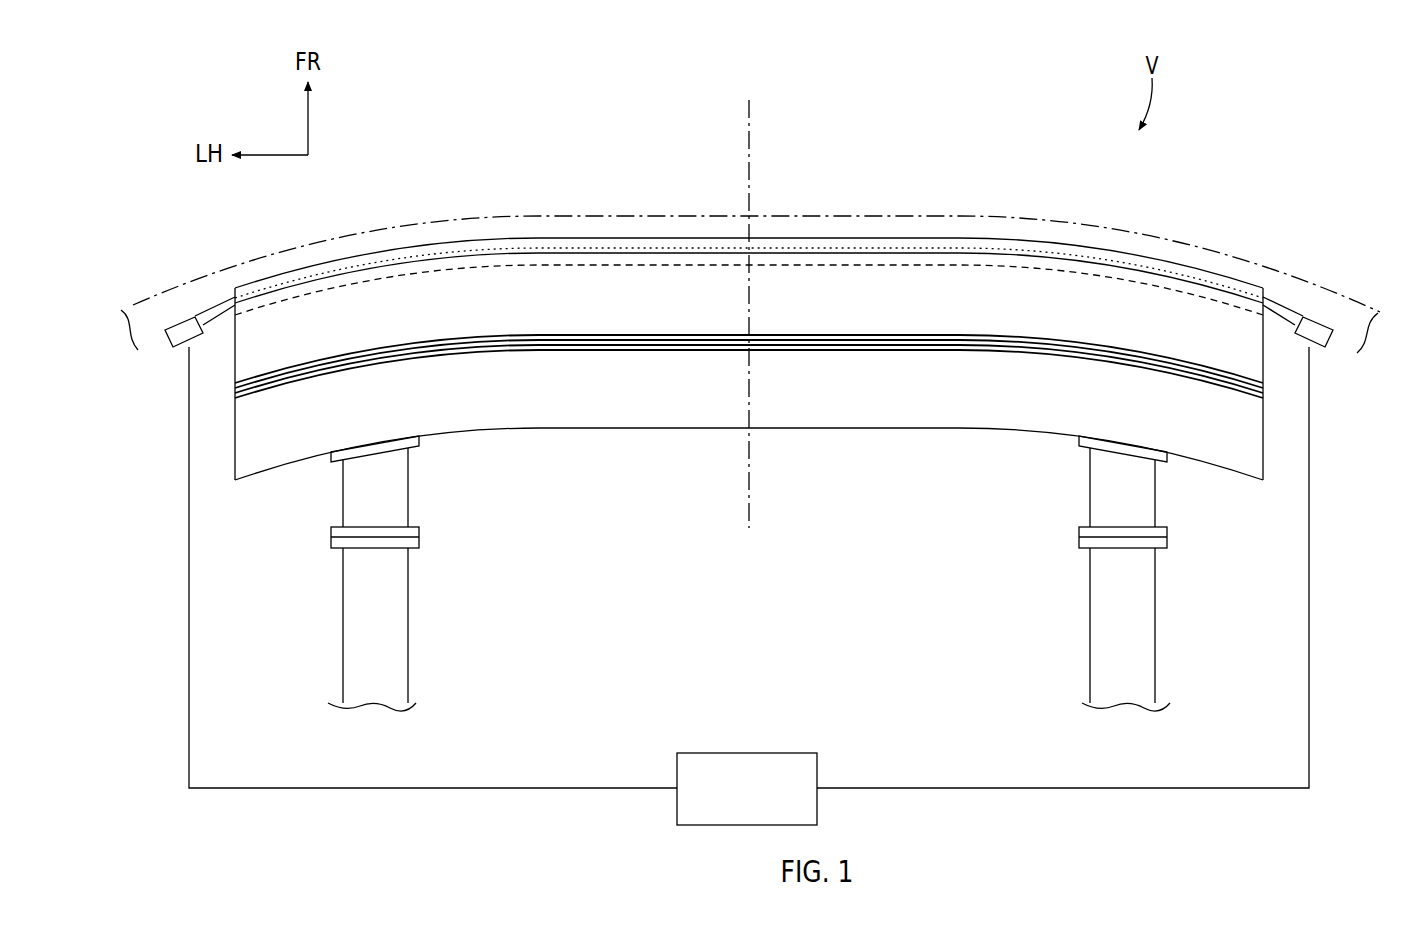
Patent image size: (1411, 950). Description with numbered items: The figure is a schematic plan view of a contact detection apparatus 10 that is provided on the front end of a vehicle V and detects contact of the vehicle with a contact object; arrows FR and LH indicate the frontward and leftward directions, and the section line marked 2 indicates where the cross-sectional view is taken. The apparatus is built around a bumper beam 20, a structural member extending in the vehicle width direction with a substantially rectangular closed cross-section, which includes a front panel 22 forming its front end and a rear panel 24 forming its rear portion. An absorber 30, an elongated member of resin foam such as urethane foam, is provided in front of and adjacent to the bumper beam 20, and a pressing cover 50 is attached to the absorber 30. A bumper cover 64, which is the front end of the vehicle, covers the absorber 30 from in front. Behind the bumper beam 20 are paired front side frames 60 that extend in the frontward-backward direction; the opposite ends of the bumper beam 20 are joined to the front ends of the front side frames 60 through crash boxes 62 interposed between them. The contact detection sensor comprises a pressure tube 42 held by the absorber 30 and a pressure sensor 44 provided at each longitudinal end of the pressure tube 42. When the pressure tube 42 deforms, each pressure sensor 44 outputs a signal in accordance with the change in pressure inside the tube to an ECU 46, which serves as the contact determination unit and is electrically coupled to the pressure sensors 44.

The section line 2- 2 is at (746, 103).
The contact detection apparatus 10 is at (1066, 162).
The bumper beam 20 is at (749, 336).
The front panel 22 is at (882, 334).
The rear panel 24 is at (922, 430).
The absorber 30 is at (583, 290).
The pressure tube 42 is at (216, 311).
The pressure sensor 44 is at (176, 348).
The ECU 46 is at (750, 753).
The pressing cover 50 is at (477, 238).
The front side frame 60 is at (749, 573).
The crash box 62 is at (408, 488).
The bumper cover 64 is at (955, 214).